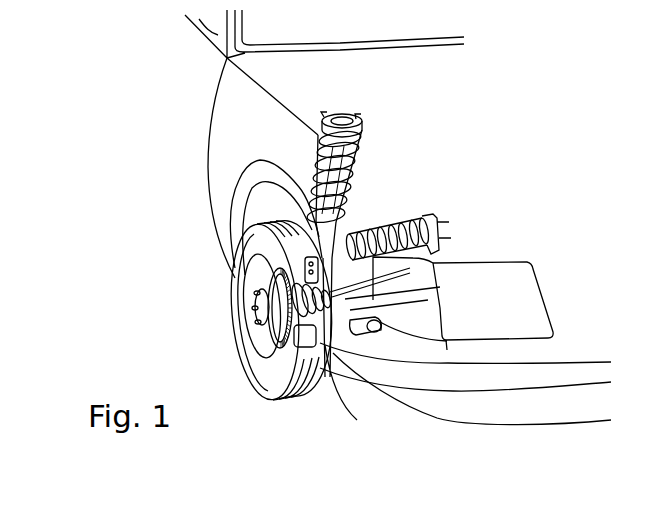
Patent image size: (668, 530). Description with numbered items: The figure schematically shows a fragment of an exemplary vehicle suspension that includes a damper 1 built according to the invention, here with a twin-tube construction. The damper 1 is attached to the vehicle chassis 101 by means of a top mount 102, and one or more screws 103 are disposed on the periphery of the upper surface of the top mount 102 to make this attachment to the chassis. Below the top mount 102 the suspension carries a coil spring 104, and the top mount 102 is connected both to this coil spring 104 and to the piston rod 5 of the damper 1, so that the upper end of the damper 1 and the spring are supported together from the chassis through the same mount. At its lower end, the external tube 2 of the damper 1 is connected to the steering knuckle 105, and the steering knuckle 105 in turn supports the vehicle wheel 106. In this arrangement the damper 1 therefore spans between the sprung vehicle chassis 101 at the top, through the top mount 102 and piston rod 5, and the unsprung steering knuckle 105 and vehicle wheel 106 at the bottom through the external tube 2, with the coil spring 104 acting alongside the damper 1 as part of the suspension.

The damper 1 is at (358, 217).
The external tube 2 is at (222, 262).
The piston rod 5 is at (355, 180).
The vehicle chassis 101 is at (222, 67).
The top mount 102 is at (361, 136).
The screws 103 is at (357, 121).
The coil spring 104 is at (357, 163).
The steering knuckle 105 is at (305, 270).
The vehicle wheel 106 is at (263, 377).